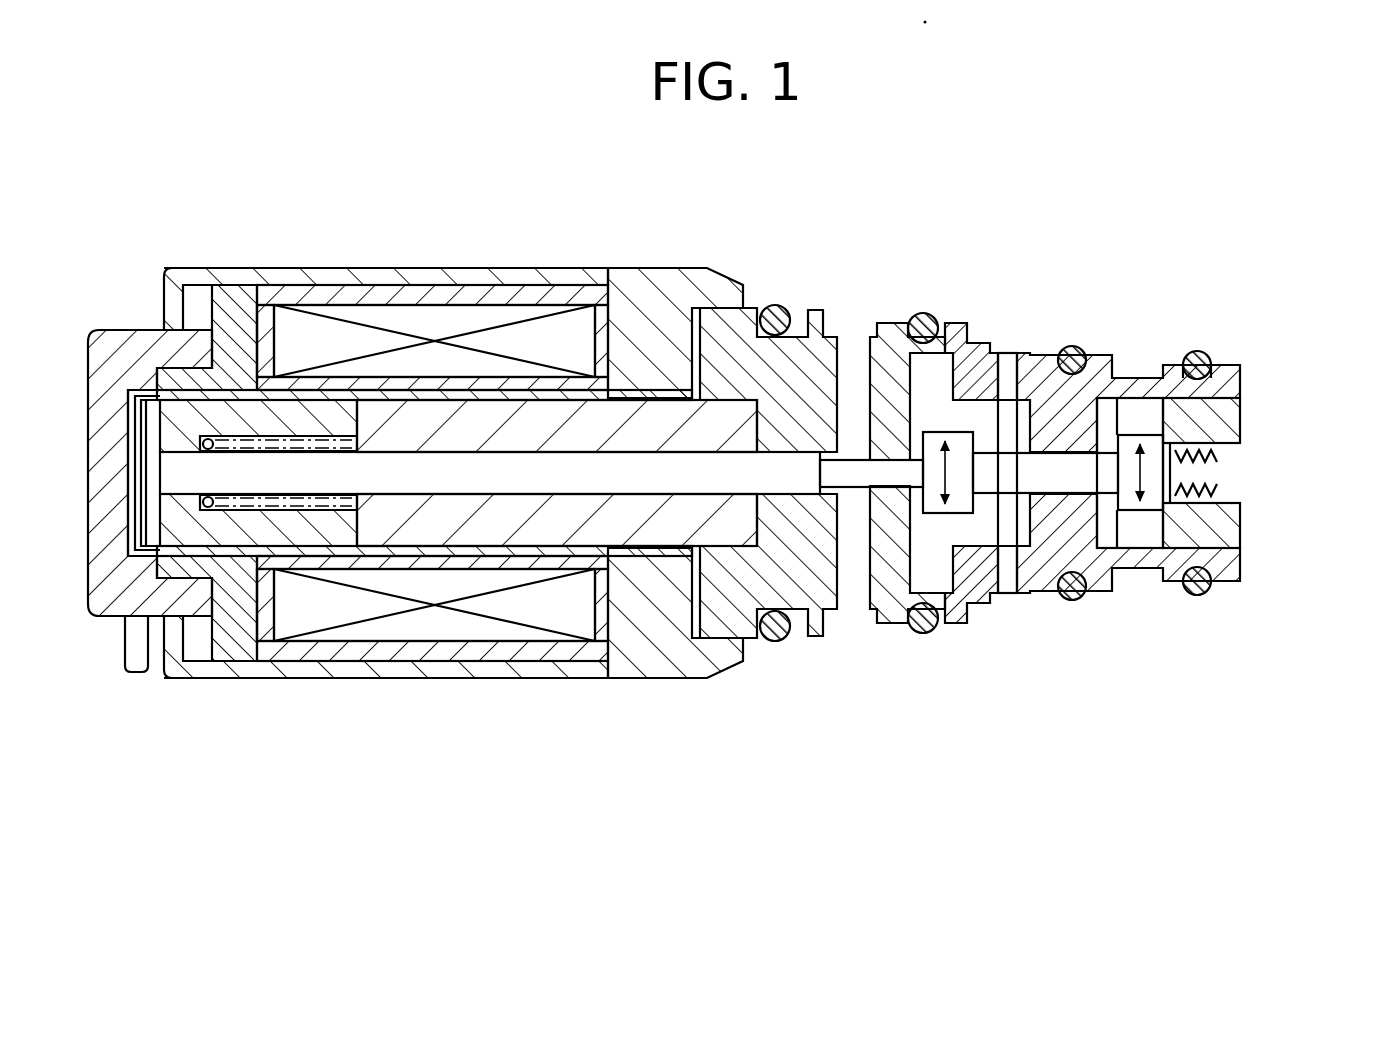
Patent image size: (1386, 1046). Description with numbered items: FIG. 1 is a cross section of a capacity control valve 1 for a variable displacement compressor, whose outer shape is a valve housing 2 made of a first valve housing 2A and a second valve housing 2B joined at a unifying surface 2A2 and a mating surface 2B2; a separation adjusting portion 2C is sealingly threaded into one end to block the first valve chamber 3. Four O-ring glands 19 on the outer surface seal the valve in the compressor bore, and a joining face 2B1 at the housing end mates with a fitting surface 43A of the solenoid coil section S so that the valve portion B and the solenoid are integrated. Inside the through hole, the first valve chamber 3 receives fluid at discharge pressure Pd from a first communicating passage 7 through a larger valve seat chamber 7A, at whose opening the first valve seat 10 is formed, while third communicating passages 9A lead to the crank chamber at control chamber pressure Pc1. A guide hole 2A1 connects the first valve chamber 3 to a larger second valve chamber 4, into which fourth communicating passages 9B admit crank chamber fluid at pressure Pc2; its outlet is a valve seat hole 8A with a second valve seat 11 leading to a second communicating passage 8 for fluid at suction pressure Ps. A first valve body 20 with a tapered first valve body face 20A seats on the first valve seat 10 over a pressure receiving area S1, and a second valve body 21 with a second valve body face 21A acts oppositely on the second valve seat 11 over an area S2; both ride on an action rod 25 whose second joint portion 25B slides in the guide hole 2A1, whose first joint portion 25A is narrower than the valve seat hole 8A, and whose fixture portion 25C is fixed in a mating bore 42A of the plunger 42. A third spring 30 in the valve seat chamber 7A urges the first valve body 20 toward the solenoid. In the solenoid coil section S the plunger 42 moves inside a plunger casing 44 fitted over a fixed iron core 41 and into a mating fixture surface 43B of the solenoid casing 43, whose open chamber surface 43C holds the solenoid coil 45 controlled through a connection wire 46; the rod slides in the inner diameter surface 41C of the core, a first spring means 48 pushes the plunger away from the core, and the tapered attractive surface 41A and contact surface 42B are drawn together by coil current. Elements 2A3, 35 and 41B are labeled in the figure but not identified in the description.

The capacity control valve 1 is at (1302, 240).
The valve housing 2 is at (1250, 523).
The first valve housing 2A is at (1265, 374).
The guide hole 2A1 is at (1078, 376).
The unifying surface 2A2 is at (985, 360).
The housing end portion 2A3 is at (1241, 395).
The second valve housing 2B is at (705, 340).
The joining face 2B1 is at (752, 308).
The mating surface 2B2 is at (920, 318).
The separation adjusting portion 2C is at (1243, 408).
The first valve chamber 3 is at (1163, 398).
The second valve chamber 4 is at (1020, 520).
The first communicating passage 7 is at (1226, 465).
The valve seat chamber 7A is at (1208, 452).
The second communicating passage 8 is at (847, 609).
The valve seat hole 8A is at (770, 642).
The third communicating passage 9A is at (1152, 562).
The fourth communicating passage 9B is at (985, 612).
The first valve seat 10 is at (1158, 396).
The second valve seat 11 is at (887, 602).
The O-ring gland 19 is at (786, 306).
The first valve body 20 is at (1122, 515).
The first valve body face 20A is at (1204, 594).
The second valve body 21 is at (960, 515).
The second valve body face 21A is at (876, 420).
The action rod 25 is at (686, 496).
The first joint portion 25A is at (840, 458).
The second joint portion 25B is at (1038, 452).
The fixture portion 25C is at (213, 560).
The third spring 30 is at (1224, 516).
The retainer 35 is at (1199, 353).
The fixed iron core 41 is at (555, 540).
The attractive surface 41A is at (318, 395).
The plunger upper portion 41B is at (612, 410).
The inner diameter surface 41C is at (495, 548).
The plunger 42 is at (199, 278).
The mating bore 42A is at (190, 407).
The contact surface 42B is at (376, 680).
The solenoid casing 43 is at (378, 286).
The mating surface 43A is at (672, 330).
The mating fixture surface 43B is at (588, 392).
The open chamber surface 43C is at (240, 640).
The plunger casing 44 is at (448, 330).
The solenoid coil 45 is at (453, 618).
The connection wire 46 is at (128, 650).
The first spring means 48 is at (318, 512).
The solenoid coil section S is at (250, 268).
The first pressure receiving area S1 is at (1128, 440).
The pressure receiving area S2 is at (985, 400).
The discharge pressure Pd is at (1282, 473).
The suction pressure Ps is at (852, 628).
The control chamber pressure Pc1 is at (1131, 628).
The crank chamber pressure Pc2 is at (1007, 630).
The valve portion B is at (1272, 694).